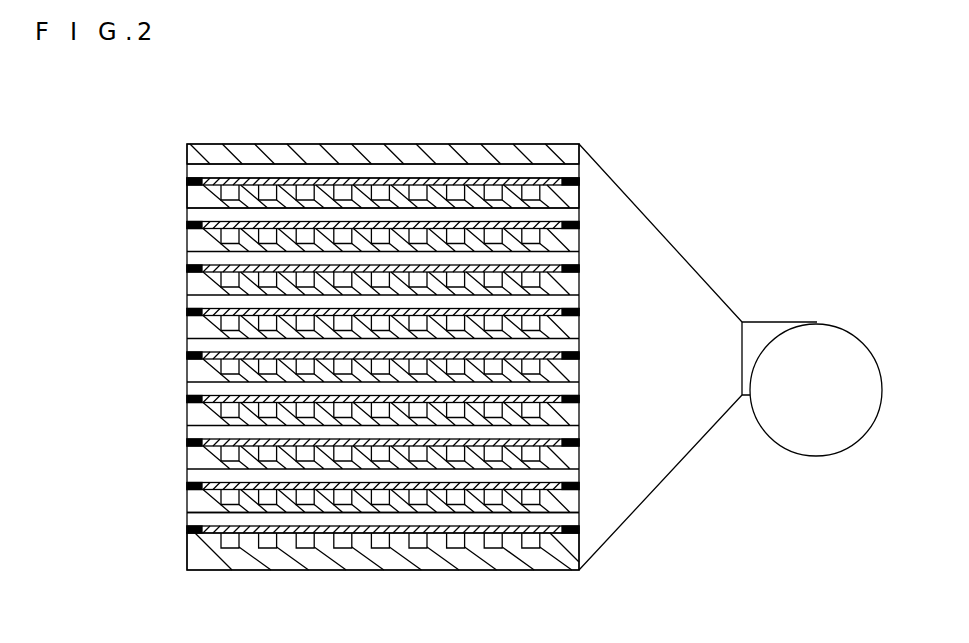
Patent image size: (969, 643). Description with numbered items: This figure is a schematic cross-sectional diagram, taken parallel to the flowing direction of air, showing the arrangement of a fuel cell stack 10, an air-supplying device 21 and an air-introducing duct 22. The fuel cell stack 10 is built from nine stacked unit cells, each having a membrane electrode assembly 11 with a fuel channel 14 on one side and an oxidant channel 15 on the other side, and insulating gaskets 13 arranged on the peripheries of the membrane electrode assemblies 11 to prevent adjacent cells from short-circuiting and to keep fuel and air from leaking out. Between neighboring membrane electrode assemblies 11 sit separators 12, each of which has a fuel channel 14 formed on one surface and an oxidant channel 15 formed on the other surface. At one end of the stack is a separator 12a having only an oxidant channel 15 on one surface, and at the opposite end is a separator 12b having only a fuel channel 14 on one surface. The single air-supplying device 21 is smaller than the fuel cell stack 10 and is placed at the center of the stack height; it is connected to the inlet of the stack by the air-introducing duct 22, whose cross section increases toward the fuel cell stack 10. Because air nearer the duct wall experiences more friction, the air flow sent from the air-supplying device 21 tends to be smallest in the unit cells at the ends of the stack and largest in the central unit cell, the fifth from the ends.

The fuel cell stack 10 is at (588, 133).
The membrane electrode assembly 11 is at (435, 187).
The separator 12 is at (203, 202).
The separator 12a is at (323, 168).
The separator 12b is at (355, 553).
The insulating gasket 13 is at (209, 178).
The fuel channel 14 is at (497, 197).
The oxidant channel 15 is at (388, 178).
The air-supplying device 21 is at (763, 322).
The air-introducing duct 22 is at (672, 247).